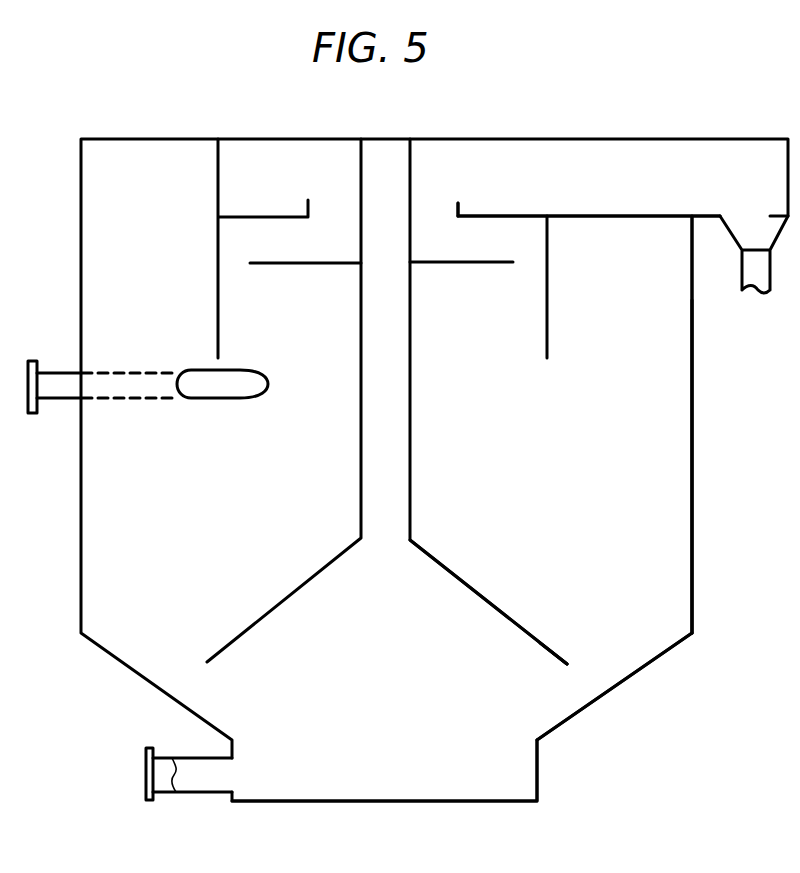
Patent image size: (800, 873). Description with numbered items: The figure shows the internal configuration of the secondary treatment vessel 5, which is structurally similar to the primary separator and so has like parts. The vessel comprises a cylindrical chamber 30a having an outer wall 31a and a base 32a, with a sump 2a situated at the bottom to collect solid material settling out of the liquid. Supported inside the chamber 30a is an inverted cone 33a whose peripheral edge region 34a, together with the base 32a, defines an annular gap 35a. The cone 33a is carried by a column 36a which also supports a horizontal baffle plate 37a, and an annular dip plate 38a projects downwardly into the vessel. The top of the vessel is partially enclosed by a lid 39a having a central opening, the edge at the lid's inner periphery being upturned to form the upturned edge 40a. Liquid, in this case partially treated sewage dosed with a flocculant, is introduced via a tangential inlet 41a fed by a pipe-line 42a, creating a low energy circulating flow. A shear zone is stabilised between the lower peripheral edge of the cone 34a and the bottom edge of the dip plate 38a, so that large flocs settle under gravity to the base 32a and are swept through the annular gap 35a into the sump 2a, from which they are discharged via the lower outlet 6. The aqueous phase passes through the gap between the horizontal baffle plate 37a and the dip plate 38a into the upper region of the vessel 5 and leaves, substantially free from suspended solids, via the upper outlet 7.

The secondary treatment vessel 5 is at (501, 130).
The sump 2a is at (540, 775).
The lower outlet 6 is at (207, 790).
The upper outlet 7 is at (742, 268).
The cylindrical chamber 30a is at (695, 520).
The outer wall 31a is at (693, 460).
The base 32a is at (607, 697).
The inverted cone 33a is at (520, 623).
The peripheral edge region 34a is at (575, 660).
The annular gap 35a is at (572, 683).
The column 36a is at (357, 217).
The horizontal baffle plate 37a is at (435, 262).
The annular dip plate 38a is at (548, 320).
The lid 39a is at (532, 215).
The upturned edge 40a is at (300, 197).
The tangential inlet 41a is at (237, 390).
The pipe-line 42a is at (70, 388).